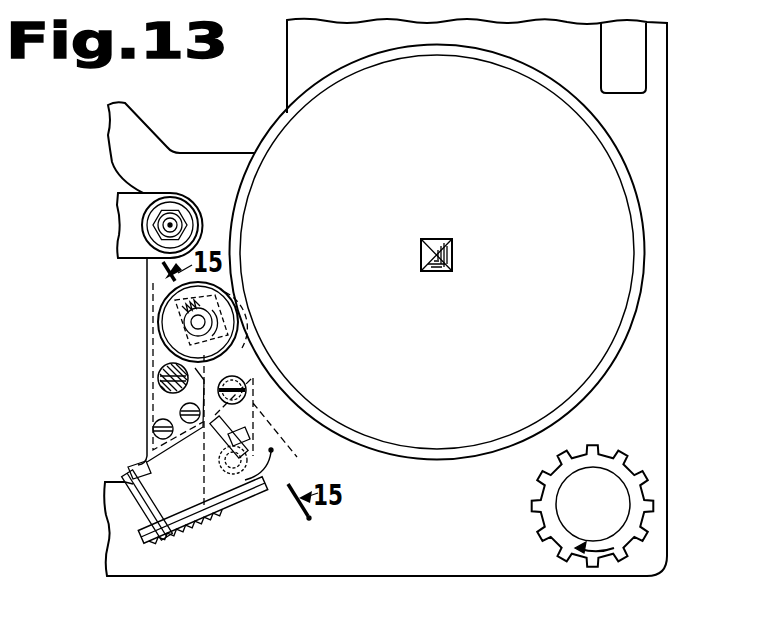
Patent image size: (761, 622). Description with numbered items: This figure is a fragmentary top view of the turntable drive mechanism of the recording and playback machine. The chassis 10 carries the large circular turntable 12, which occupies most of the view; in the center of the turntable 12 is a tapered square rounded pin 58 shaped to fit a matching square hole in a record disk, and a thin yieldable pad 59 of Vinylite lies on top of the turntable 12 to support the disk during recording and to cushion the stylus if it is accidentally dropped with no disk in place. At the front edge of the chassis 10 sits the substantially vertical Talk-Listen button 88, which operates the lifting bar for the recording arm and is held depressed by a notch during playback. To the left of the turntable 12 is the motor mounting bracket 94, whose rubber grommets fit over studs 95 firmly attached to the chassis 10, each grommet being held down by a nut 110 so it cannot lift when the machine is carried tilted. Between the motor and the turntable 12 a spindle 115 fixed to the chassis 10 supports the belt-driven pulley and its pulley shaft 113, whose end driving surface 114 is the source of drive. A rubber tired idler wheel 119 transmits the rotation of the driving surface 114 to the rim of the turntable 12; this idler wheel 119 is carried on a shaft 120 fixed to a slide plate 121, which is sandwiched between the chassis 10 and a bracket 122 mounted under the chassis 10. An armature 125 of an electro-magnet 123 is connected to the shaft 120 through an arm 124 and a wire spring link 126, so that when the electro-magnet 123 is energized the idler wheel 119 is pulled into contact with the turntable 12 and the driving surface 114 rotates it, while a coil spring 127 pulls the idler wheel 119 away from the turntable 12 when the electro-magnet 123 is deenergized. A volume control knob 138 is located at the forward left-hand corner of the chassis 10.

The chassis 10 is at (381, 581).
The turntable 12 is at (645, 297).
The tapered square rounded pin 58 is at (453, 250).
The thin yieldable pad 59 is at (635, 255).
The Talk-Listen button 88 is at (640, 73).
The mounting bracket 94 is at (130, 228).
The studs 95 is at (170, 226).
The nut 110 is at (177, 214).
The pulley shaft 113 is at (160, 373).
The driving surface 114 is at (163, 380).
The spindle 115 is at (170, 388).
The rubber tired idler wheel 119 is at (157, 318).
The shaft 120 is at (197, 324).
The slide plate 121 is at (278, 411).
The bracket 122 is at (233, 504).
The electro-magnet 123 is at (143, 465).
The arm 124 is at (271, 450).
The armature 125 is at (160, 503).
The wire spring link 126 is at (225, 377).
The coil spring 127 is at (192, 308).
The volume control knob 138 is at (638, 487).